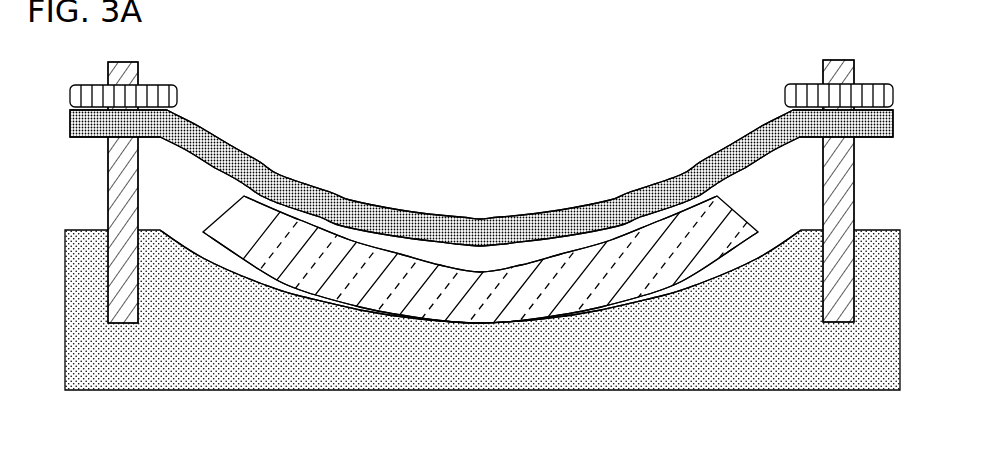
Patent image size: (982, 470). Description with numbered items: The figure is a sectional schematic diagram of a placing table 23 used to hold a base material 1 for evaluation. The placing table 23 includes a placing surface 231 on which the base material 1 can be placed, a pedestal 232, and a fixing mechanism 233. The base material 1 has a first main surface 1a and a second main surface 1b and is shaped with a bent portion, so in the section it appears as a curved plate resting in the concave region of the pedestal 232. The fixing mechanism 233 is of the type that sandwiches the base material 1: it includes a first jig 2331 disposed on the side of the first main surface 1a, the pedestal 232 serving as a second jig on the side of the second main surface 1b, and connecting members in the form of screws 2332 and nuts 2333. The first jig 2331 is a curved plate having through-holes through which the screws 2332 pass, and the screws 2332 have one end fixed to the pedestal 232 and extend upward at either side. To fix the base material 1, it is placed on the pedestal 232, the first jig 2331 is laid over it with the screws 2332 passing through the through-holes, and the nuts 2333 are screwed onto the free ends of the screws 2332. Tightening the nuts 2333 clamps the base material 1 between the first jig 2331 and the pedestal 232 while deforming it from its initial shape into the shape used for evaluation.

The base material 1 is at (492, 298).
The first main surface 1a is at (455, 266).
The second main surface 1b is at (318, 301).
The placing table 23 is at (482, 226).
The placing surface 231 is at (181, 233).
The pedestal 232 is at (762, 303).
The fixing mechanism 233 is at (481, 189).
The first jig 2331 is at (242, 163).
The screw 2332 is at (823, 70).
The nut 2333 is at (787, 97).